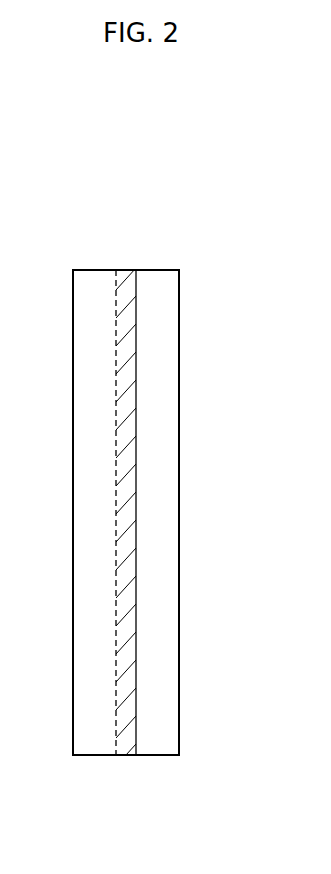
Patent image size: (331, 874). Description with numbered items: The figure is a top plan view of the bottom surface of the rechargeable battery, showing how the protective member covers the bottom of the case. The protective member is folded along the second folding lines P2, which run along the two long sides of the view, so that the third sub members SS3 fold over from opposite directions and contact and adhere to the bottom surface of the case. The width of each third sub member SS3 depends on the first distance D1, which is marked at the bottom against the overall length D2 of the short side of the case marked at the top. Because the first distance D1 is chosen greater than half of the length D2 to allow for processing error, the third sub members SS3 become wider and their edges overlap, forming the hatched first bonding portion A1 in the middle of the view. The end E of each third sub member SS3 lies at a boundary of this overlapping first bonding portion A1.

The first bonding portion A1 is at (136, 309).
The end of the third sub members E is at (116, 341).
The second folding lines P2 is at (73, 466).
The third sub members SS3 is at (79, 584).
The first distance D1 is at (74, 809).
The length of the short side of the case D2 is at (73, 268).